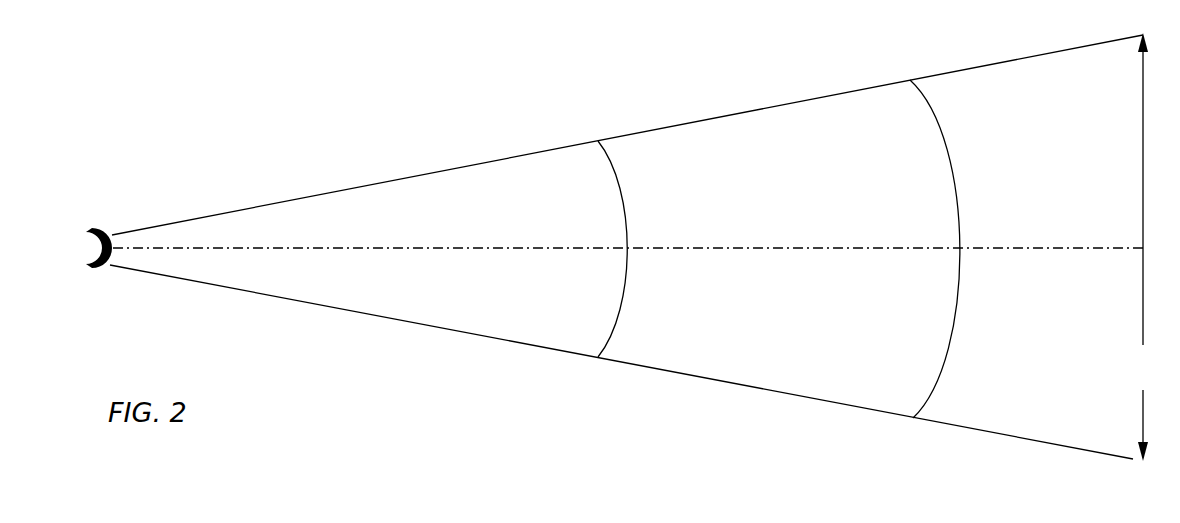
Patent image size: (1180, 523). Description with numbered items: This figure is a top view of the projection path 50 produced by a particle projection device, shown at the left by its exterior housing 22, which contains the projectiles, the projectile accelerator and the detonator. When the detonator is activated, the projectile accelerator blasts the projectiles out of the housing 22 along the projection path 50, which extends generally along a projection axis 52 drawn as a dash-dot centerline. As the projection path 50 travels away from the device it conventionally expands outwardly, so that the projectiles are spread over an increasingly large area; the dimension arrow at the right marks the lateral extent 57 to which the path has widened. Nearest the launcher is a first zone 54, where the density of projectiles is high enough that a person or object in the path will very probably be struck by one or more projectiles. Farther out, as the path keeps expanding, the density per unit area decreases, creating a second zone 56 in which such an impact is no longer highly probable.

The exterior housing 22 is at (112, 227).
The projection path 50 is at (398, 175).
The projection axis 52 is at (1092, 257).
The first zone 54 is at (519, 249).
The second zone 56 is at (855, 249).
The lateral extent 57 is at (1145, 247).